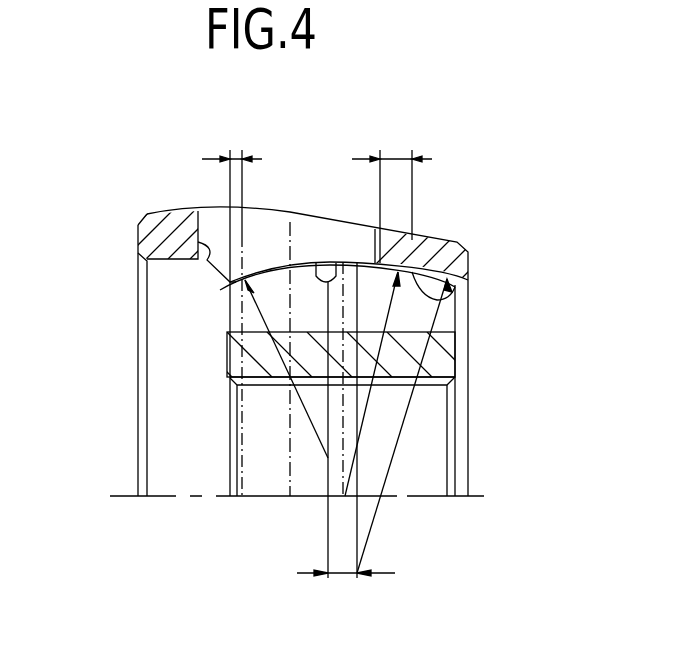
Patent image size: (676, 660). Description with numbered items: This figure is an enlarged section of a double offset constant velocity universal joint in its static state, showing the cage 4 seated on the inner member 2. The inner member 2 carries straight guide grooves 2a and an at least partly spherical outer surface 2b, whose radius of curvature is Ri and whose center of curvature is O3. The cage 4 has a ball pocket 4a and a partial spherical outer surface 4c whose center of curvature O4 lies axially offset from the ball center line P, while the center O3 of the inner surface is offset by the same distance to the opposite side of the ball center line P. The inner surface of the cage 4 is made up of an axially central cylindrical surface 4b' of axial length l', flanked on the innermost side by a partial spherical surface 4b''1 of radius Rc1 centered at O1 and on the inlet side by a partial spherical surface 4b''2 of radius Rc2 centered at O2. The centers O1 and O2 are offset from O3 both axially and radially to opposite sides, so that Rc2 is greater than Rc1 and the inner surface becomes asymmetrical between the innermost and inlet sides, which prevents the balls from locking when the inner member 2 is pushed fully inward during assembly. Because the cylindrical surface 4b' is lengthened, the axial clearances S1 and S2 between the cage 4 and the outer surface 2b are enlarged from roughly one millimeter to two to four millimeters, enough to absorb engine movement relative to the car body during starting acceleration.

The cage 4 is at (145, 242).
The ball pocket 4a is at (207, 260).
The cylindrical surface 4b' is at (349, 211).
The partial spherical surface 4b''1 is at (240, 364).
The partial spherical surface 4b''2 is at (463, 426).
The outer surface of the cage 4c is at (425, 235).
The inner member 2 is at (248, 360).
The straight guide grooves 2a is at (455, 327).
The outer surface of the inner member 2b is at (468, 280).
The axial clearance S1 is at (230, 157).
The axial clearance S2 is at (397, 158).
The axial length of the cylindrical surface l' is at (346, 595).
The radius of curvature of partial spherical surface 4b''1 Rc1 is at (290, 412).
The radius of curvature of partial spherical surface 4b''2 Rc2 is at (393, 450).
The radius of curvature of the outer surface of the inner member Ri is at (363, 413).
The center of curvature of partial spherical surface 4b''1 O1 is at (320, 465).
The center of curvature of partial spherical surface 4b''2 O2 is at (357, 573).
The center of curvature of the outer surface of the inner member O3 is at (343, 497).
The center of curvature of the outer surface of the cage O4 is at (240, 497).
The ball center line P is at (290, 478).